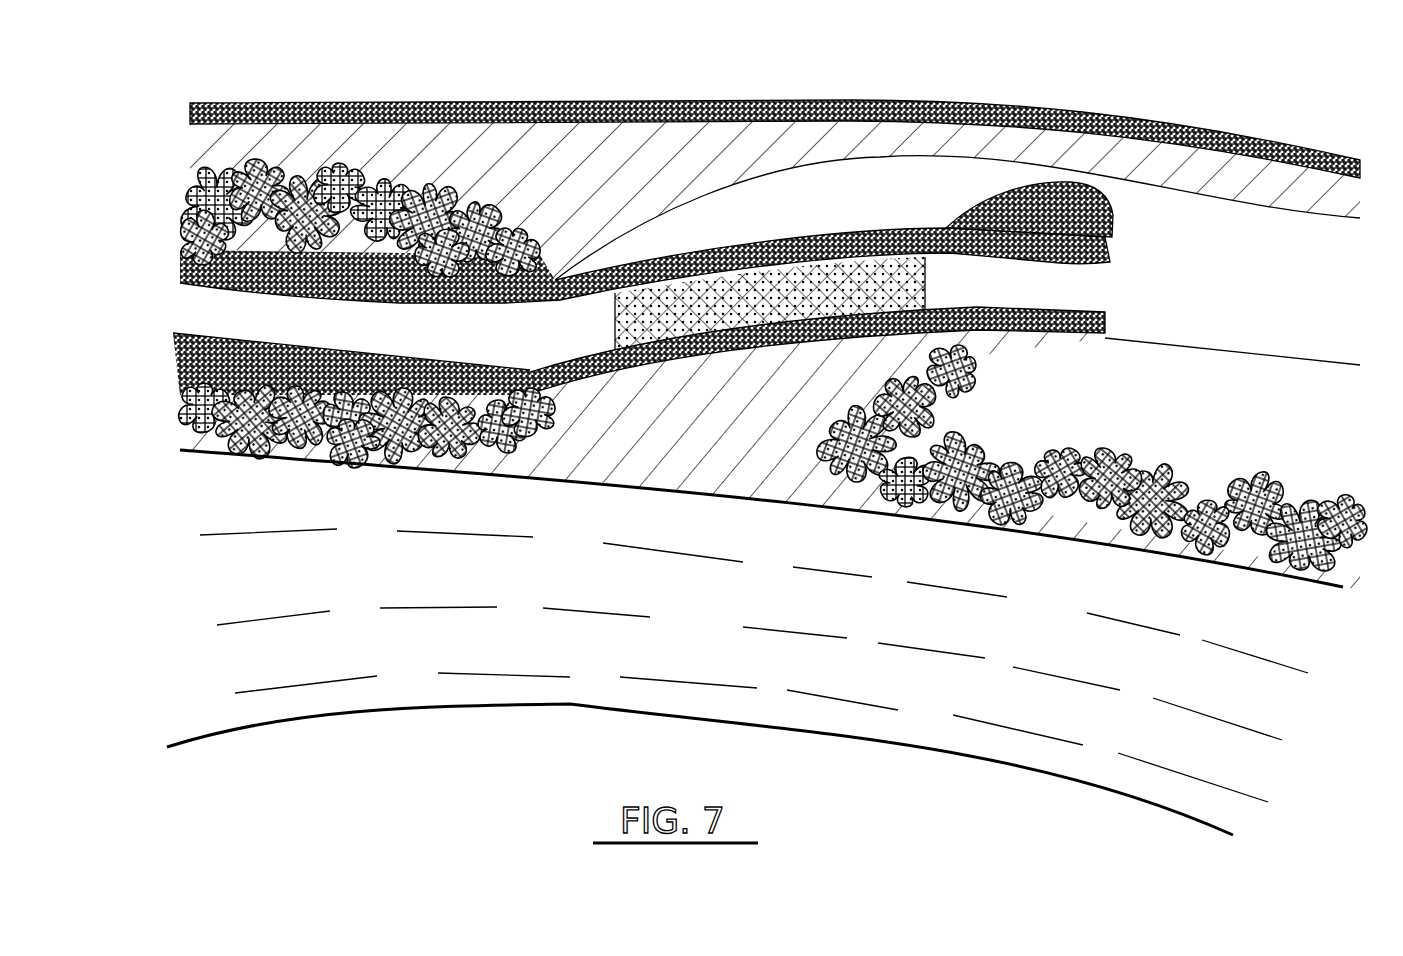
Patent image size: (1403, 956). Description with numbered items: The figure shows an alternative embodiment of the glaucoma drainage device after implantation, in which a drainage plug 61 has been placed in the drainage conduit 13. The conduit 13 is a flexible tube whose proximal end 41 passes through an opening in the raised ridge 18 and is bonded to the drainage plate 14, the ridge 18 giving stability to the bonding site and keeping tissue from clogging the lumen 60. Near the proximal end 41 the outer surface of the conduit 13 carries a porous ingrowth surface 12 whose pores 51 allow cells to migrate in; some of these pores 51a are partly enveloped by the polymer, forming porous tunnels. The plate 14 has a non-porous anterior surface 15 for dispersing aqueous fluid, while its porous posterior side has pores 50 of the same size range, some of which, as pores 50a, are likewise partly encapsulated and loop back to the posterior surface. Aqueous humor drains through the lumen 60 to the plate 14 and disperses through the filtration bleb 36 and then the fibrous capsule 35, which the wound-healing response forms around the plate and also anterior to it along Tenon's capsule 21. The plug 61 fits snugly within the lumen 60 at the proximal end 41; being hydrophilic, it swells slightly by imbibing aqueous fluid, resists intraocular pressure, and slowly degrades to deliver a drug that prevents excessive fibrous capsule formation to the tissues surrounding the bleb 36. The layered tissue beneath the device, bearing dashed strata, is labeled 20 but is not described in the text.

The porous ingrowth surface 12 is at (333, 237).
The drainage conduit 13 is at (957, 218).
The drainage plate 14 is at (1153, 373).
The anterior surface 15 is at (1250, 353).
The raised ridge 18 is at (1050, 192).
The bone / vessel wall 20 is at (845, 619).
The Tenon's capsule 21 is at (560, 105).
The fibrous capsule 35 is at (690, 150).
The filtration bleb 36 is at (1336, 304).
The proximal end 41 is at (1110, 242).
The pores 50 is at (937, 497).
The partly encapsulated pores 50a is at (1113, 503).
The pores 51 is at (293, 433).
The partly encapsulated pores 51a is at (350, 437).
The lumen 60 is at (398, 341).
The drainage plug 61 is at (717, 302).